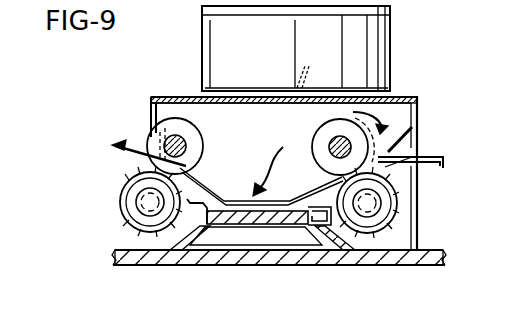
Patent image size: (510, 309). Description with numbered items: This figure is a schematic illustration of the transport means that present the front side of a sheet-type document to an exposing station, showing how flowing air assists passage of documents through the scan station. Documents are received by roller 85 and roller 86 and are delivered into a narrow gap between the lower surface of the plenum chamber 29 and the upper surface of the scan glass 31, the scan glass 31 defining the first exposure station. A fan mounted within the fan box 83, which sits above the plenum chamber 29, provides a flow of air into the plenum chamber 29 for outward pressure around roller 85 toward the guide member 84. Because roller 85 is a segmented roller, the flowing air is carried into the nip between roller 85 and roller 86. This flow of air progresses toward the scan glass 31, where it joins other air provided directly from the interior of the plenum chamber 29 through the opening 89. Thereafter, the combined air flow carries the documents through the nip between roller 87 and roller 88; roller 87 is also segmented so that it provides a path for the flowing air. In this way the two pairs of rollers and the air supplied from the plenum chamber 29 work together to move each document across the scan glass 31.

The plenum chamber 29 is at (152, 97).
The scan glass 31 is at (295, 225).
The fan box 83 is at (390, 40).
The guide member 84 is at (420, 150).
The roller 85 is at (320, 106).
The roller 86 is at (398, 215).
The roller 87 is at (150, 140).
The roller 88 is at (115, 192).
The opening 89 is at (265, 202).